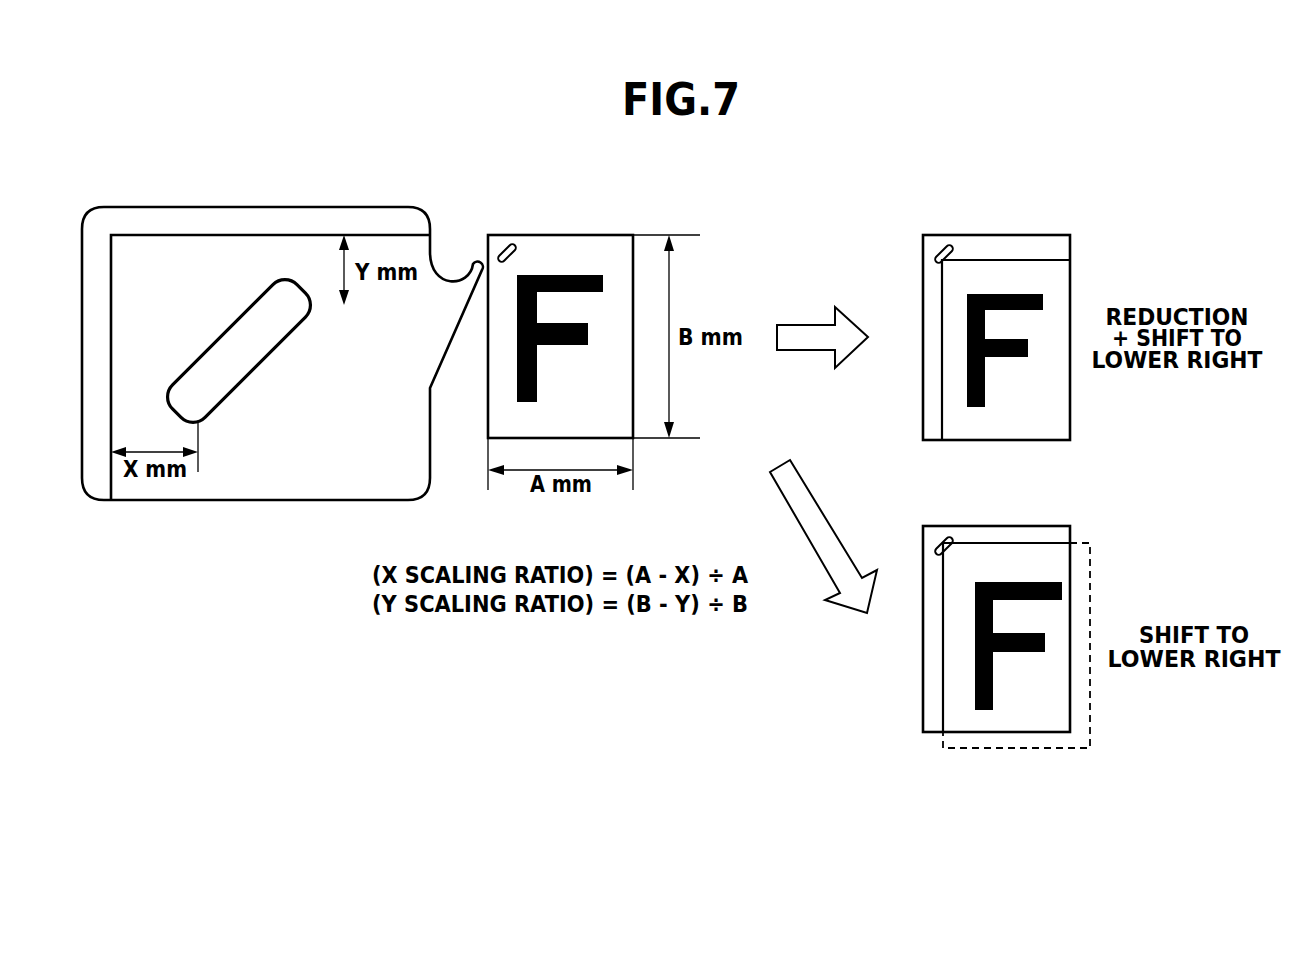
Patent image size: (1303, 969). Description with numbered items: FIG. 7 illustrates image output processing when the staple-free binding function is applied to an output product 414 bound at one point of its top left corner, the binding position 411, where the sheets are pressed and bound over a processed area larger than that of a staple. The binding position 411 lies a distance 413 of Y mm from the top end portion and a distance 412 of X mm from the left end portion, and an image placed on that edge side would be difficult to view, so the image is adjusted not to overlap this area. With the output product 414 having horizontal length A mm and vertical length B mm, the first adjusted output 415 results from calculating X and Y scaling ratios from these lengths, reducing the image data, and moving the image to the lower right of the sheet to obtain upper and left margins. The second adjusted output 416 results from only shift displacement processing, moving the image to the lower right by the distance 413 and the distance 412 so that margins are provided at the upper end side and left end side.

The binding position 411 is at (239, 351).
The distance from the left end portion 412 is at (282, 368).
The distance from the top end portion 413 is at (313, 305).
The output product 414 is at (555, 318).
The first adjusted output 415 is at (990, 320).
The second adjusted output 416 is at (1000, 620).